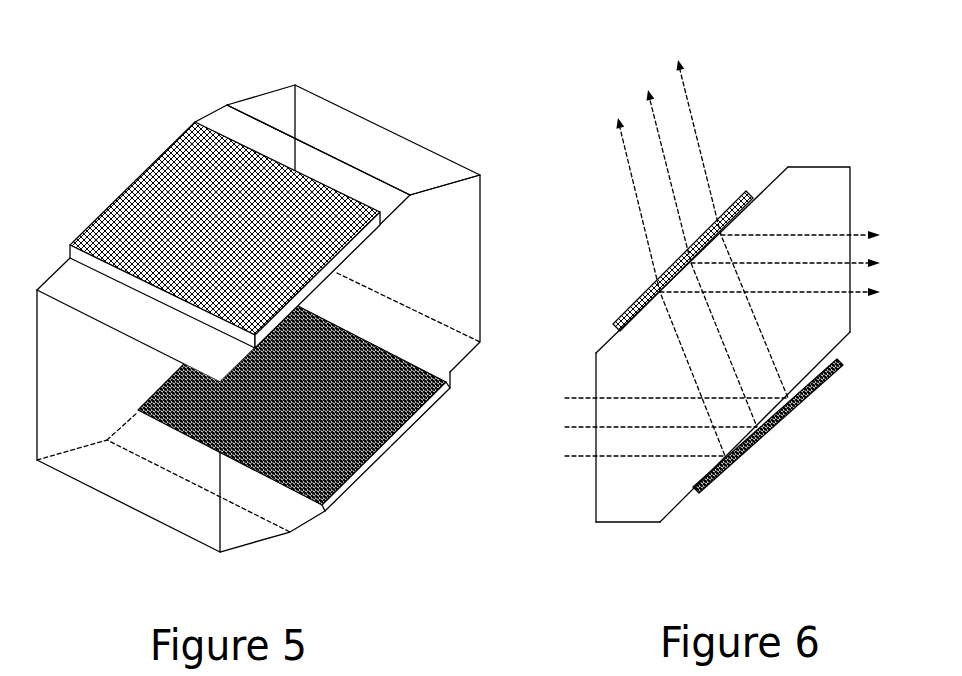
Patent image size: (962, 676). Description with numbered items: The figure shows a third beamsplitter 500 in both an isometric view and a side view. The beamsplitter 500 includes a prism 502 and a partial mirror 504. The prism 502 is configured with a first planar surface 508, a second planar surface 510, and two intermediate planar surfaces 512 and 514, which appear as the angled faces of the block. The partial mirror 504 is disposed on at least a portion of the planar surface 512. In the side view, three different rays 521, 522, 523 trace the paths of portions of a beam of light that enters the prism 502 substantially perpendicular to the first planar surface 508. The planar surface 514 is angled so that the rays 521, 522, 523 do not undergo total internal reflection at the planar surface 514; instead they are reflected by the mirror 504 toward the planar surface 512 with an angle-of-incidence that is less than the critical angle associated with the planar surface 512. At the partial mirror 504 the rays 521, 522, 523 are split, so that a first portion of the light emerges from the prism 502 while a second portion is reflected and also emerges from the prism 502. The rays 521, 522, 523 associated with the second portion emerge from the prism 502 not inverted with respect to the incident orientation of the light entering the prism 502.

In FIG. 5, the beamsplitter 500 is at (152, 112).
In FIG. 6, the beamsplitter 500 is at (822, 112).
In FIG. 5, the prism 502 is at (227, 103).
In FIG. 6, the prism 502 is at (635, 295).
In FIG. 5, the partial mirror 504 is at (135, 190).
In FIG. 6, the partial mirror 504 is at (775, 430).
In FIG. 5, the first planar surface 508 is at (145, 500).
In FIG. 6, the first planar surface 508 is at (598, 512).
In FIG. 5, the second planar surface 510 is at (482, 214).
In FIG. 6, the second planar surface 510 is at (838, 323).
In FIG. 5, the intermediate planar surface 512 is at (62, 283).
In FIG. 6, the intermediate planar surface 512 is at (598, 345).
In FIG. 5, the intermediate planar surface 514 is at (305, 517).
In FIG. 6, the intermediate planar surface 514 is at (672, 510).
In FIG. 6, the ray 521 is at (690, 85).
In FIG. 6, the ray 522 is at (652, 113).
In FIG. 6, the ray 523 is at (625, 160).